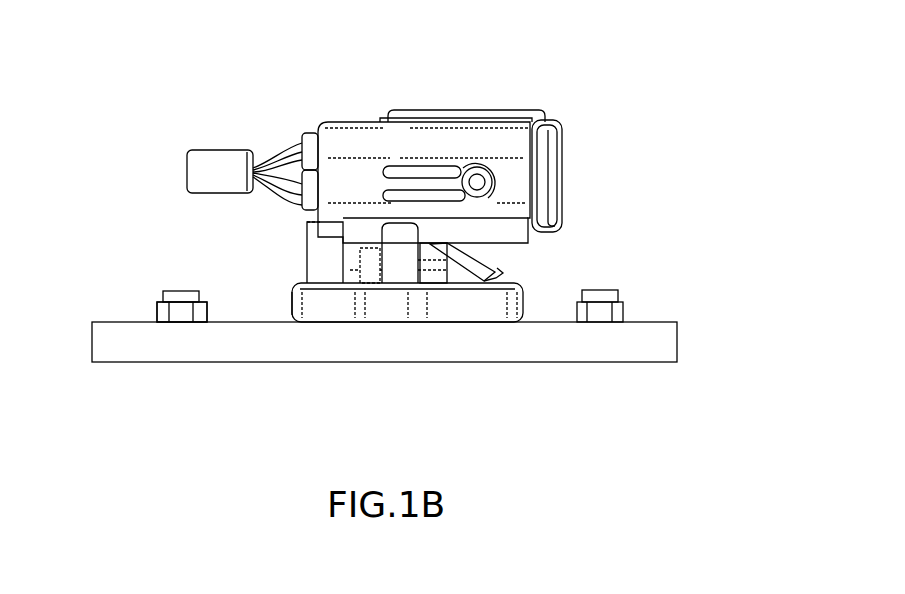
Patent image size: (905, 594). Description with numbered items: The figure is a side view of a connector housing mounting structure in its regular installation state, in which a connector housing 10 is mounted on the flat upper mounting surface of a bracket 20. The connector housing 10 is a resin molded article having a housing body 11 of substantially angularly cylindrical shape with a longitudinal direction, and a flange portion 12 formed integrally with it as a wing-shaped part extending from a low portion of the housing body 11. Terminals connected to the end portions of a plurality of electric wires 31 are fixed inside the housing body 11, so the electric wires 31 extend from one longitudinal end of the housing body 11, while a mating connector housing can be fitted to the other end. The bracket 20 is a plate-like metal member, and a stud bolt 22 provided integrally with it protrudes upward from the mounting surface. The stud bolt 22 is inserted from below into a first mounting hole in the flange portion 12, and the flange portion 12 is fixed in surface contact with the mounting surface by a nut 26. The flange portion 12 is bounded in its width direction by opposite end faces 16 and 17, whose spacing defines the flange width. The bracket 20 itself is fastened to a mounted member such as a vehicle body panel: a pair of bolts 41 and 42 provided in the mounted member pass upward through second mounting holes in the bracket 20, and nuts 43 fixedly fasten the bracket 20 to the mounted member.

The connector housing 10 is at (597, 127).
The housing body 11 is at (526, 110).
The flange portion 12 is at (443, 308).
The end face 16 is at (526, 291).
The end face 17 is at (294, 296).
The bracket 20 is at (693, 342).
The stud bolt 22 is at (400, 222).
The nut 26 is at (360, 258).
The electric wires 31 is at (261, 160).
The bolt 41 is at (186, 291).
The bolt 42 is at (600, 290).
The nut 43 is at (157, 312).